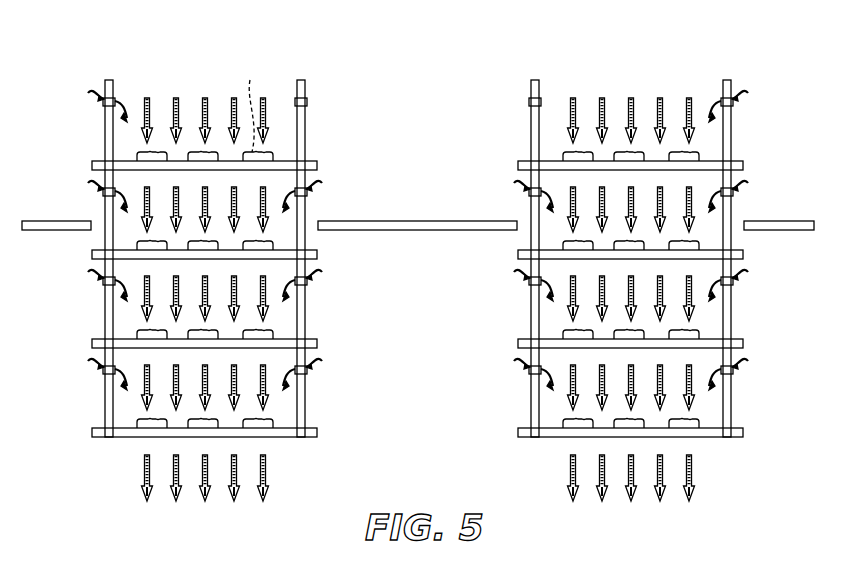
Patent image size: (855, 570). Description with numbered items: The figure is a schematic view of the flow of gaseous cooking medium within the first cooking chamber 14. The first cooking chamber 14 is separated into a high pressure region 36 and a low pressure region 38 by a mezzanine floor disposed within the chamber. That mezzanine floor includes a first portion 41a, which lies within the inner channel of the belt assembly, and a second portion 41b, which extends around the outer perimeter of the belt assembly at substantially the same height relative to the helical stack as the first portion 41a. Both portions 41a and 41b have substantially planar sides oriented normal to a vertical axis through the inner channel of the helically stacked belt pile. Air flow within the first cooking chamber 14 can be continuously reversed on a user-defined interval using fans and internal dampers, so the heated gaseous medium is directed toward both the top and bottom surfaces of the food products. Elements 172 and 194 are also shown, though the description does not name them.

The first cooking chamber 14 is at (750, 66).
The high pressure region 36 is at (434, 208).
The low pressure region 38 is at (431, 328).
The first portion 41a is at (453, 221).
The second portion 41b is at (53, 220).
The gas injection nozzle 172 is at (91, 144).
The gas injection nozzle 194 is at (725, 97).